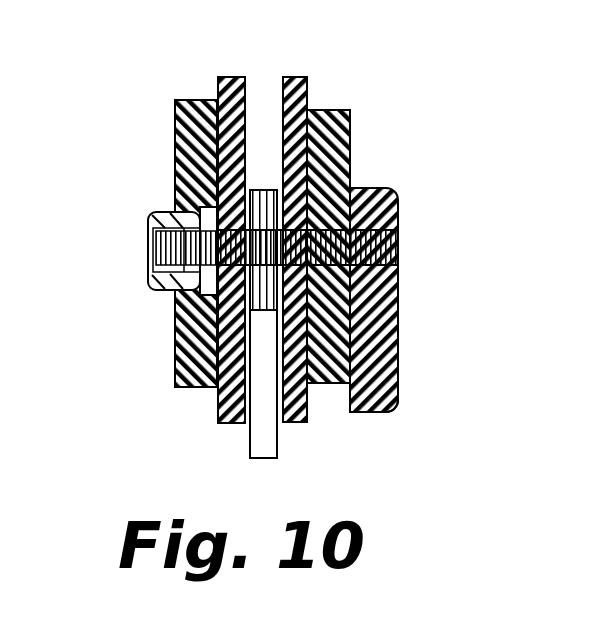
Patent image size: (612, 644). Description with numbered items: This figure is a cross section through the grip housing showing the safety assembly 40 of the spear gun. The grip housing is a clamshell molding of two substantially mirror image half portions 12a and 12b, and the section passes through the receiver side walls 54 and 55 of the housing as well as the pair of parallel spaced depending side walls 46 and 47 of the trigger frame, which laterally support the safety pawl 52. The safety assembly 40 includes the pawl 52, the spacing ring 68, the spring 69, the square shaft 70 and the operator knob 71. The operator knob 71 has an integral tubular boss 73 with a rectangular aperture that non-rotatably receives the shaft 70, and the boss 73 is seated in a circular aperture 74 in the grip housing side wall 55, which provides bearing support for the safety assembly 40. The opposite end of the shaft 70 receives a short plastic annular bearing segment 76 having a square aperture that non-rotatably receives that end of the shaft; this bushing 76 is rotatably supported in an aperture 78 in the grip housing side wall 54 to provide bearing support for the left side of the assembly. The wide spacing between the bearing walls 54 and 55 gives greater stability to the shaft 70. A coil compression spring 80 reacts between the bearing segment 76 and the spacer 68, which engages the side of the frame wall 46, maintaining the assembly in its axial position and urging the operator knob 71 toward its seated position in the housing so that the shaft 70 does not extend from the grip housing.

The safety assembly 40 is at (152, 341).
The half portion of grip housing 12a is at (190, 388).
The half portion of grip housing 12b is at (323, 385).
The side wall of frame 46 is at (228, 428).
The side wall of frame 47 is at (290, 428).
The safety pawl 52 is at (263, 190).
The receiver side wall 54 is at (175, 372).
The receiver side wall 55 is at (350, 130).
The spacing ring 68 is at (177, 293).
The spring 69 is at (175, 185).
The shaft 70 is at (398, 243).
The operator knob 71 is at (393, 327).
The tubular boss 73 is at (328, 135).
The circular aperture 74 is at (380, 368).
The bearing segment 76 is at (150, 280).
The aperture 78 is at (165, 207).
The coil compression spring 80 is at (200, 207).